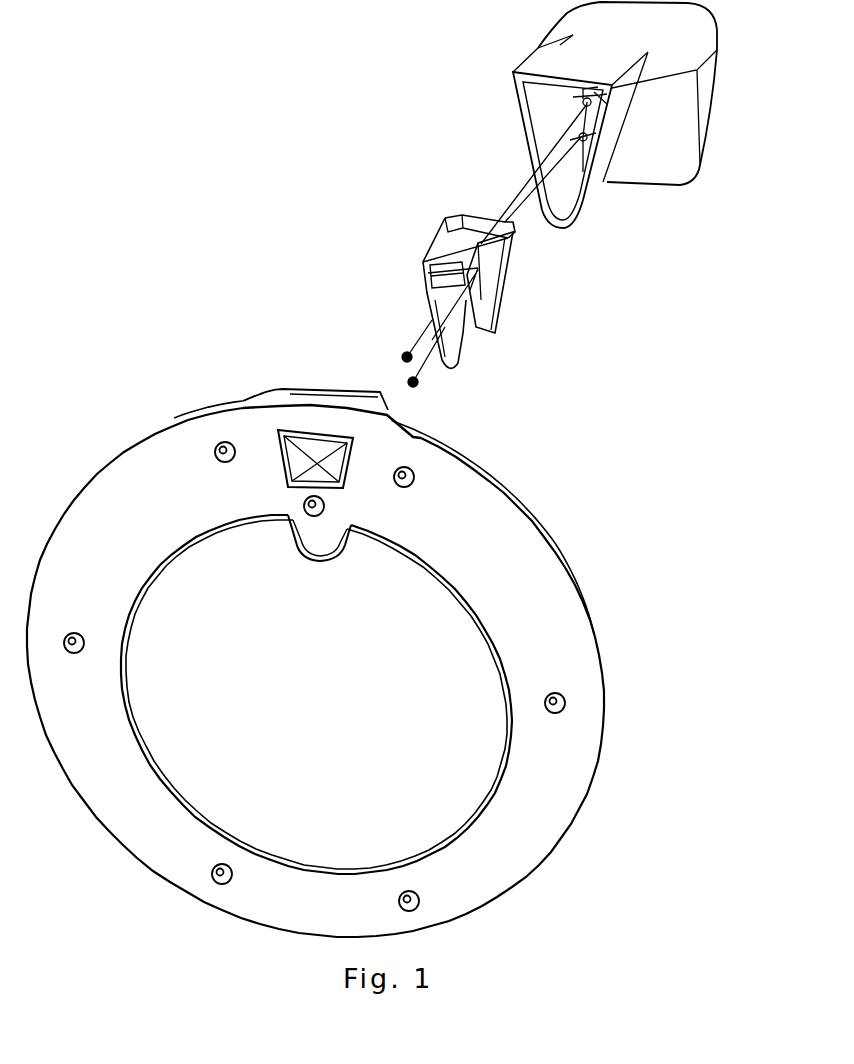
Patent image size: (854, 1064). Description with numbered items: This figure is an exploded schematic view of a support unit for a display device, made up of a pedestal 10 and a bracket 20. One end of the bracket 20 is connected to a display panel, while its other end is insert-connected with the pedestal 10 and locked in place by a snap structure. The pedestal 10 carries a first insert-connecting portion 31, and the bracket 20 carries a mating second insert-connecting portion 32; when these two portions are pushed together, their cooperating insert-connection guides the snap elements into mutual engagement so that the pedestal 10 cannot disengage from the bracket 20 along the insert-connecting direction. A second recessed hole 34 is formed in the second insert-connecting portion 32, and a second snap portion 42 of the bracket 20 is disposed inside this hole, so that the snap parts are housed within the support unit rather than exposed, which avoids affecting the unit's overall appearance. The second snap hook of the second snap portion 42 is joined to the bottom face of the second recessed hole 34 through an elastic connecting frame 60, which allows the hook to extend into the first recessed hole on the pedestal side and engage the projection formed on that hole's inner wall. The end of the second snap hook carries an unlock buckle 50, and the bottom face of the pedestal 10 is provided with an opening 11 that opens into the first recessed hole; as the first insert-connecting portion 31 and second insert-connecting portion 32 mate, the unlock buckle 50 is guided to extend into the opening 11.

The pedestal 10 is at (155, 510).
The opening 11 is at (320, 455).
The bracket 20 is at (607, 22).
The first insert-connecting portion 31 is at (356, 388).
The second insert-connecting portion 32 is at (527, 120).
The second recessed hole 34 is at (566, 198).
The second snap portion 42 is at (447, 272).
The unlock buckle 50 is at (430, 290).
The elastic connecting frame 60 is at (482, 305).